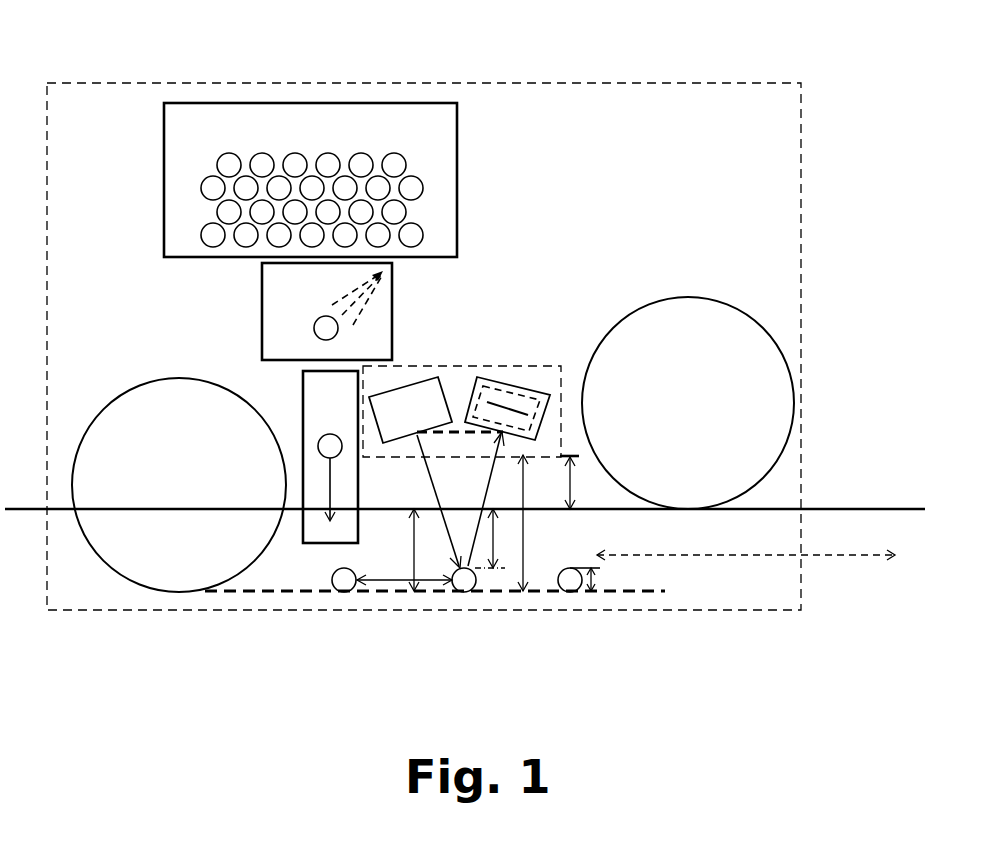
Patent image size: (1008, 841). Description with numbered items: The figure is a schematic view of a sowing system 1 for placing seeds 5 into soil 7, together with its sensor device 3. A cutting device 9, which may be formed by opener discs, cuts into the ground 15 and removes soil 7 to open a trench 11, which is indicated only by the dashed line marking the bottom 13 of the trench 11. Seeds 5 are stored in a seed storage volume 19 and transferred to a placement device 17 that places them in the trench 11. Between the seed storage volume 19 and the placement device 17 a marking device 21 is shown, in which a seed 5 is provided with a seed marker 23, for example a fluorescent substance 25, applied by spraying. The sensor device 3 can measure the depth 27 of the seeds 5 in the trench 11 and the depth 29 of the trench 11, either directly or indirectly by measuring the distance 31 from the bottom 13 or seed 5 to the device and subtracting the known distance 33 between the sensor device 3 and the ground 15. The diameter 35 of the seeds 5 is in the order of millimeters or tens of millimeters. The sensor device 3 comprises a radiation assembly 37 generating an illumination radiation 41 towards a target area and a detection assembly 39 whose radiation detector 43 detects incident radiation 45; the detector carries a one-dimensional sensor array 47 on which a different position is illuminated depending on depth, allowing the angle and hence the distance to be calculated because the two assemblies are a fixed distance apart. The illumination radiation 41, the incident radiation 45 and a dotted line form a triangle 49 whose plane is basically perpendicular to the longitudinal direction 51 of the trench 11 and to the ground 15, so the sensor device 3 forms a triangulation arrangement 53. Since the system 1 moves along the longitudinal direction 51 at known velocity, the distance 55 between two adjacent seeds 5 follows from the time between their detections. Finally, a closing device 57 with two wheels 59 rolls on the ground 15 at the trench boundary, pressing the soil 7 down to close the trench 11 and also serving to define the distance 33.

The sowing system 1 is at (643, 83).
The sensor device 3 is at (489, 378).
The seeds 5 is at (361, 163).
The soil 7 is at (535, 523).
The cutting device 9 is at (179, 378).
The trench 11 is at (435, 630).
The bottom of the trench 13 is at (290, 594).
The ground 15 is at (840, 509).
The placement device 17 is at (303, 400).
The seed storage volume 19 is at (313, 103).
The marking device 21 is at (393, 292).
The seed marker 23 is at (271, 293).
The fluorescent substance 25 is at (345, 297).
The depth of the seeds 27 is at (512, 552).
The depth of the trench 29 is at (414, 542).
The distance 31 is at (573, 485).
The distance 33 is at (580, 492).
The diameter 35 is at (600, 585).
The radiation assembly 37 is at (401, 384).
The detection assembly 39 is at (502, 398).
The illumination radiation 41 is at (432, 478).
The radiation detector 43 is at (533, 405).
The incident radiation 45 is at (490, 470).
The one-dimensional sensor array 47 is at (540, 385).
The triangle 49 is at (460, 428).
The longitudinal direction 51 is at (845, 560).
The triangulation arrangement 53 is at (423, 364).
The distance between two adjacent seeds 55 is at (390, 588).
The closing device 57 is at (688, 361).
The wheels 59 is at (688, 297).